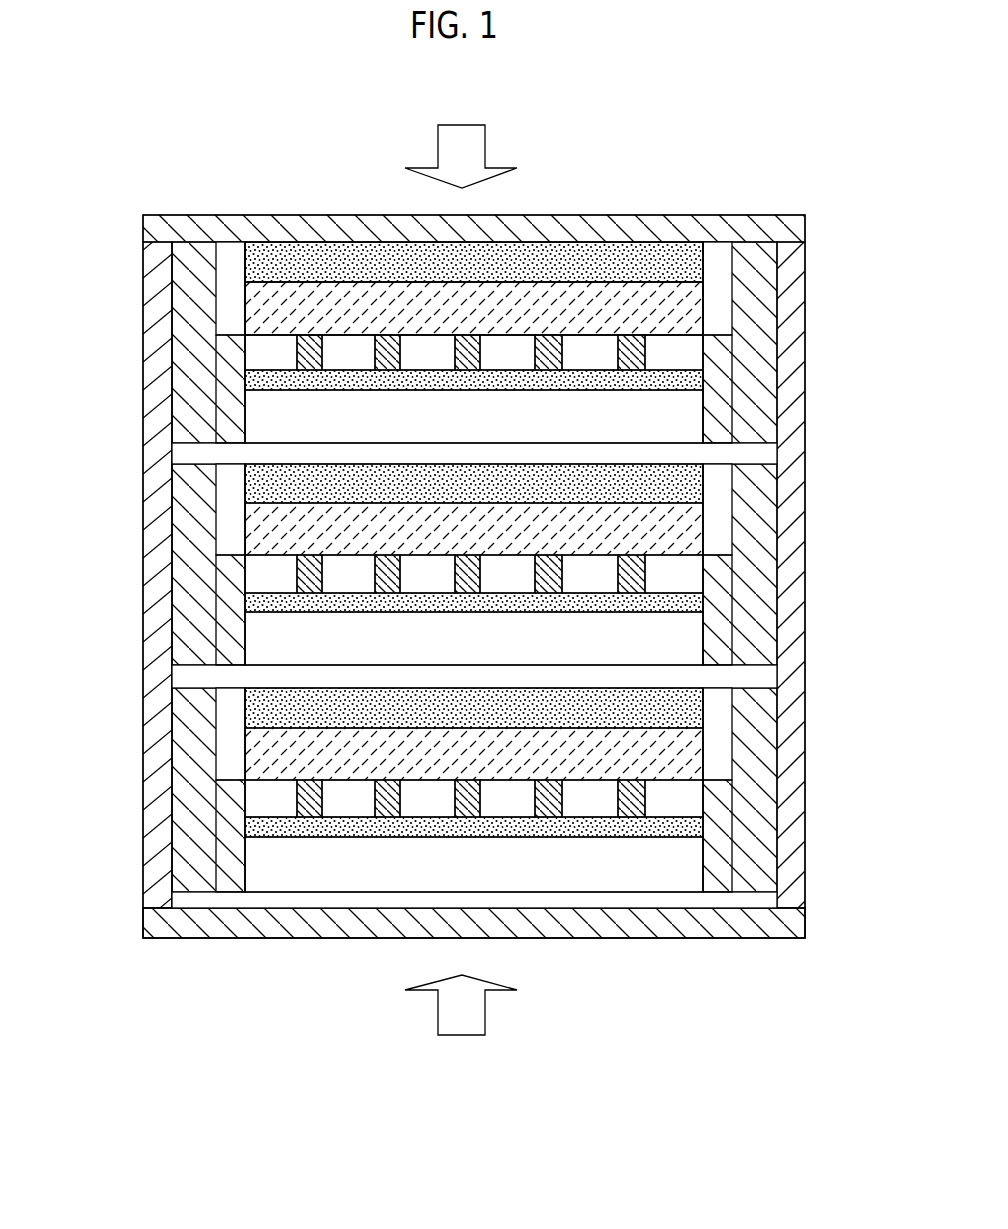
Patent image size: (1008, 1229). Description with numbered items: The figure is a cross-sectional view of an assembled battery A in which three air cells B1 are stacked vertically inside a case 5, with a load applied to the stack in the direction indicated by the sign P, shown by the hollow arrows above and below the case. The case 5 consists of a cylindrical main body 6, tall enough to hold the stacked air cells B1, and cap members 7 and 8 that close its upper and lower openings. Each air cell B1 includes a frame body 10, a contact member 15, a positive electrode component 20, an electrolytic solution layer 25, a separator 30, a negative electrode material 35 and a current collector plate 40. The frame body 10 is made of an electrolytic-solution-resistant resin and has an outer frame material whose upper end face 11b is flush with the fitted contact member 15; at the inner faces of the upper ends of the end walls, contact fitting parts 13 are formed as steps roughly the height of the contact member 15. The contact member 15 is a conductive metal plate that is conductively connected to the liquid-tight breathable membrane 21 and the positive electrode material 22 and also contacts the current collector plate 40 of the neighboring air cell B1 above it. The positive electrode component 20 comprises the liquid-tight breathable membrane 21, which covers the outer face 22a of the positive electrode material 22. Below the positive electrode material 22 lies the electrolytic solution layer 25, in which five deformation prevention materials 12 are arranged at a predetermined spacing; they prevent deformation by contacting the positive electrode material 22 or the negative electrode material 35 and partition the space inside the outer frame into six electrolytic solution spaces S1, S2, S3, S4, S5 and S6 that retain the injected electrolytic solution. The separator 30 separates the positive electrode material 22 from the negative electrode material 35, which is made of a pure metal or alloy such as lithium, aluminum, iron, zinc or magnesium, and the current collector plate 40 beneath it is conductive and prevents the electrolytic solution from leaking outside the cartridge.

The case 5 is at (808, 928).
The main body 6 is at (800, 862).
The cap member 7 is at (805, 228).
The cap member 8 is at (623, 928).
The frame body 10 is at (185, 265).
The upper end face 11b is at (187, 238).
The deformation prevention material 12 is at (310, 335).
The contact fitting part 13 is at (220, 243).
The contact member 15 is at (229, 240).
The positive electrode component 20 is at (474, 288).
The liquid-tight breathable membrane 21 is at (688, 262).
The positive electrode material 22 is at (680, 300).
The outer face 22a is at (402, 280).
The electrolytic solution layer 25 is at (702, 352).
The separator 30 is at (690, 381).
The negative electrode material 35 is at (472, 435).
The current collector plate 40 is at (760, 454).
The assembled battery A is at (136, 196).
The air cell B1 is at (166, 343).
The direction of load application P is at (461, 581).
The electrolytic solution space S1 is at (257, 364).
The electrolytic solution space S2 is at (334, 364).
The electrolytic solution space S3 is at (413, 364).
The electrolytic solution space S4 is at (493, 364).
The electrolytic solution space S5 is at (576, 364).
The electrolytic solution space S6 is at (660, 364).